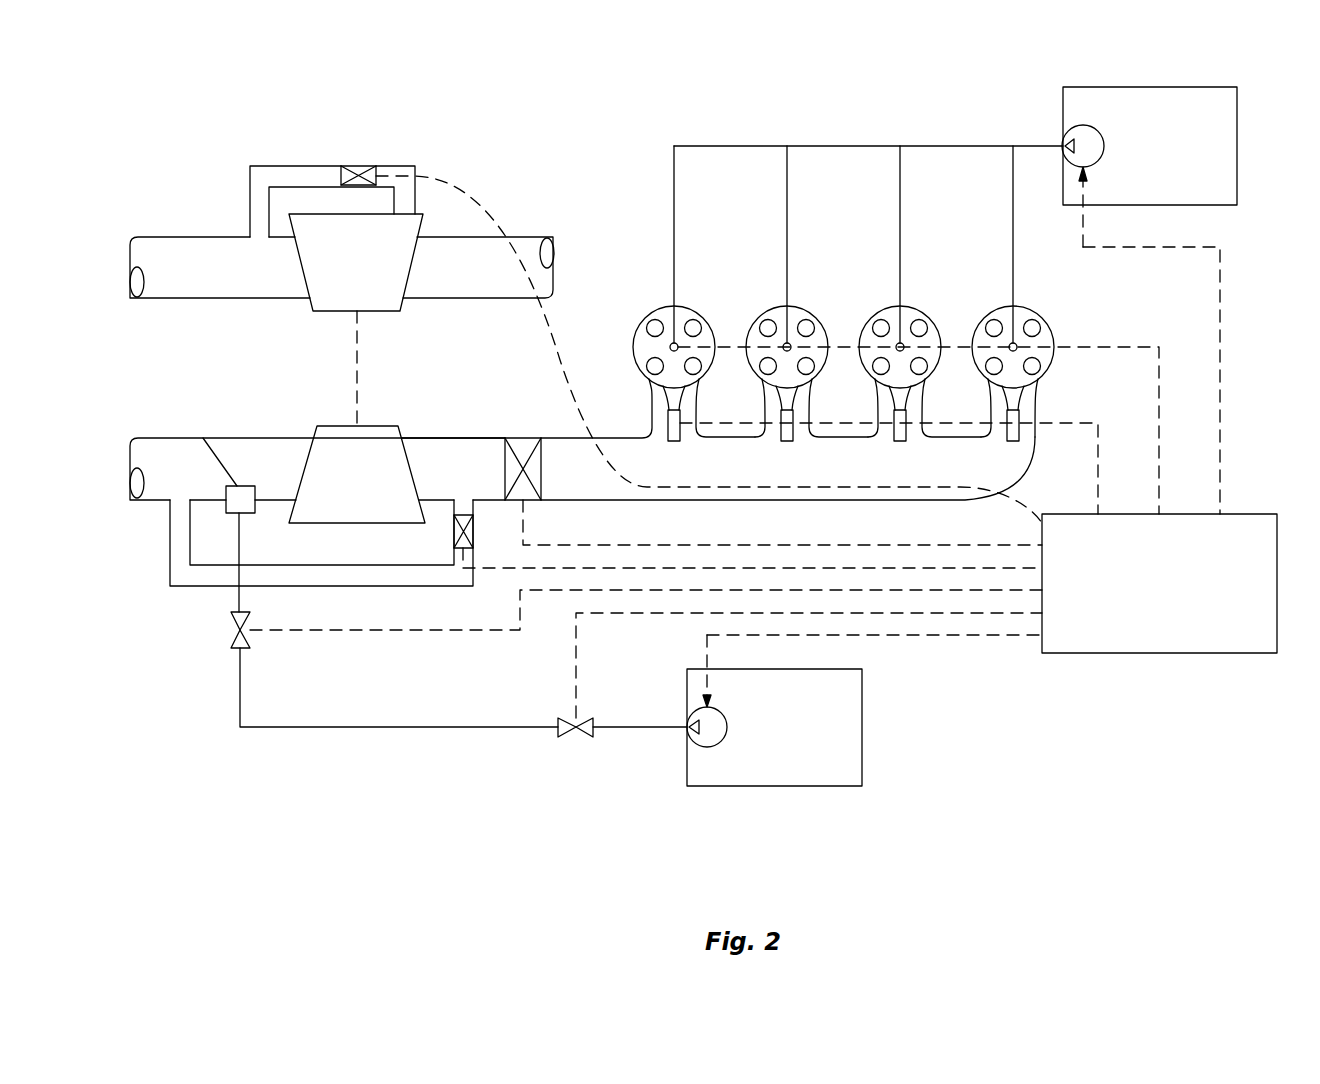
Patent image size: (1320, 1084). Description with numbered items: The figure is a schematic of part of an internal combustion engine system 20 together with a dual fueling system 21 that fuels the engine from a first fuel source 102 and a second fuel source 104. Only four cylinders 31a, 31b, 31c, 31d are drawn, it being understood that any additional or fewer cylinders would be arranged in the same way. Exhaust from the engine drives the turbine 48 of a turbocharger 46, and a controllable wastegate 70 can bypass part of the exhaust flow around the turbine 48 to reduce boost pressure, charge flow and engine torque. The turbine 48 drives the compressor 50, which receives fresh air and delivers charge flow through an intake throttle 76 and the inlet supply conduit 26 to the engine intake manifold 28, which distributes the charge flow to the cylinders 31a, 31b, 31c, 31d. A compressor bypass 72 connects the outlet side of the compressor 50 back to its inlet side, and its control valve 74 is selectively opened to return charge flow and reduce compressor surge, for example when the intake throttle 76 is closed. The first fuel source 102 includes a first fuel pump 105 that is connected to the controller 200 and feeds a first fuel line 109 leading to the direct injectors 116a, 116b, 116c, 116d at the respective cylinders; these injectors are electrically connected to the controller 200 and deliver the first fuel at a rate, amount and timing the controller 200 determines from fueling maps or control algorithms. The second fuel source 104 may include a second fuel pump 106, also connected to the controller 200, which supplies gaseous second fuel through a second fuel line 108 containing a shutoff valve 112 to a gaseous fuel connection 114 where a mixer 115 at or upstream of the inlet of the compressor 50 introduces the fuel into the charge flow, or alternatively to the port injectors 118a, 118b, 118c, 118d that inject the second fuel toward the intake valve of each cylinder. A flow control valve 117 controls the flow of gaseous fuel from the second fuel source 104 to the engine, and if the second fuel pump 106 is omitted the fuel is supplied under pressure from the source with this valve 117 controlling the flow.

The internal combustion engine system 20 is at (575, 158).
The fueling system 21 is at (1003, 680).
The inlet supply conduit 26 is at (163, 438).
The engine intake manifold 28 is at (768, 500).
The cylinder 31a is at (982, 316).
The cylinder 31b is at (869, 316).
The cylinder 31c is at (756, 316).
The cylinder 31d is at (643, 316).
The turbocharger 46 is at (330, 363).
The turbine 48 is at (372, 280).
The compressor 50 is at (372, 491).
The wastegate 70 is at (357, 166).
The compressor bypass 72 is at (178, 588).
The control valve 74 is at (463, 513).
The intake throttle 76 is at (523, 438).
The first fuel source 102 is at (1175, 161).
The second fuel source 104 is at (798, 740).
The first fuel pump 105 is at (1100, 135).
The second fuel pump 106 is at (700, 745).
The second fuel line 108 is at (422, 730).
The first fuel line 109 is at (845, 146).
The shutoff valve 112 is at (227, 637).
The gaseous fuel connection 114 is at (239, 520).
The mixer 115 is at (203, 438).
The direct injector 116a is at (1014, 341).
The direct injector 116b is at (901, 341).
The direct injector 116c is at (788, 341).
The direct injector 116d is at (675, 341).
The flow control valve 117 is at (576, 737).
The port injector 118a is at (1007, 416).
The port injector 118b is at (894, 416).
The port injector 118c is at (781, 416).
The port injector 118d is at (668, 416).
The controller 200 is at (1185, 599).